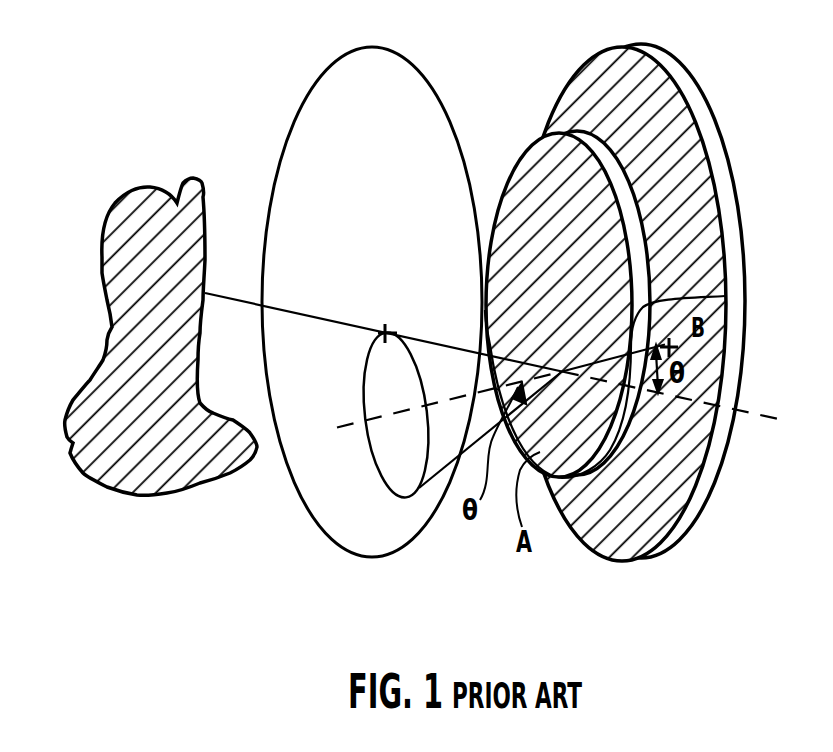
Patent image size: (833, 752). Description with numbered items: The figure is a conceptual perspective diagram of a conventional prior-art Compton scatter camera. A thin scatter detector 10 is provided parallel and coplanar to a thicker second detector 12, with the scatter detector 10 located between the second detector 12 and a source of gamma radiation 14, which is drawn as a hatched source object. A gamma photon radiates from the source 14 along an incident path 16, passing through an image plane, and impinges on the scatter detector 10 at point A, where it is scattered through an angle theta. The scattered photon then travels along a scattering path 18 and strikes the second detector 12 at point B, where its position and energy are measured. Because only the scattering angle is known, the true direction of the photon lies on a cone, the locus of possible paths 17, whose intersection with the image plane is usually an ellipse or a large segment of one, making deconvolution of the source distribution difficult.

The scatter detector 10 is at (593, 135).
The second detector 12 is at (710, 143).
The source of gamma radiation 14 is at (112, 257).
The incident path 16 is at (303, 313).
The locus of possible paths 17 is at (374, 455).
The scattering path 18 is at (725, 296).